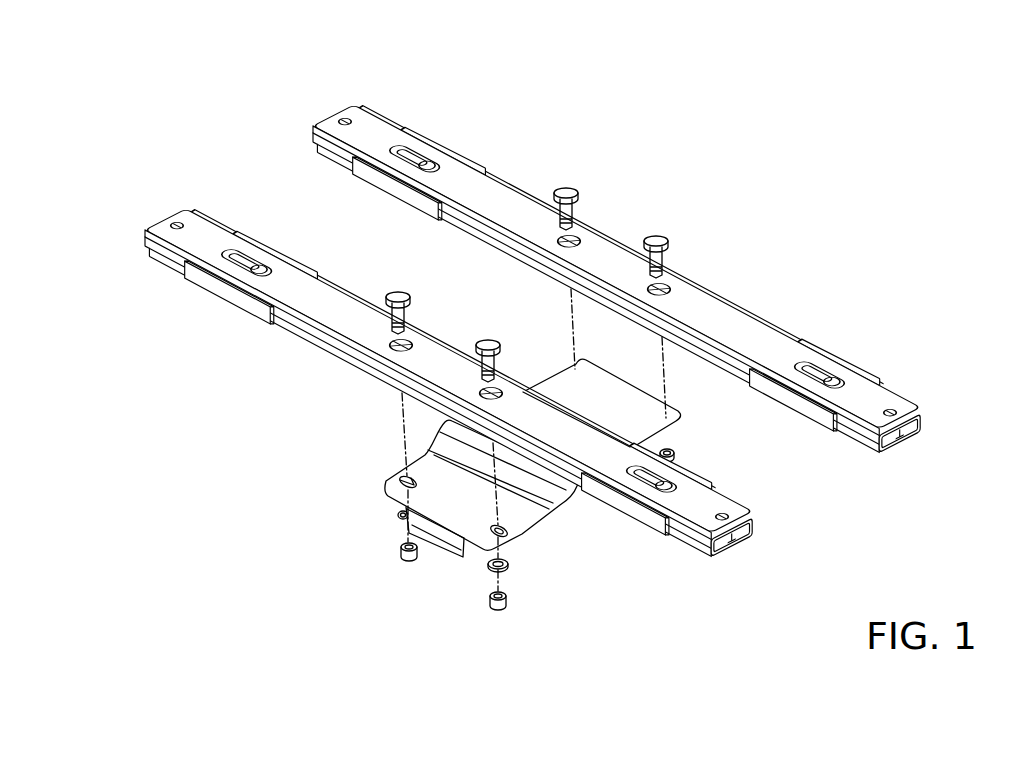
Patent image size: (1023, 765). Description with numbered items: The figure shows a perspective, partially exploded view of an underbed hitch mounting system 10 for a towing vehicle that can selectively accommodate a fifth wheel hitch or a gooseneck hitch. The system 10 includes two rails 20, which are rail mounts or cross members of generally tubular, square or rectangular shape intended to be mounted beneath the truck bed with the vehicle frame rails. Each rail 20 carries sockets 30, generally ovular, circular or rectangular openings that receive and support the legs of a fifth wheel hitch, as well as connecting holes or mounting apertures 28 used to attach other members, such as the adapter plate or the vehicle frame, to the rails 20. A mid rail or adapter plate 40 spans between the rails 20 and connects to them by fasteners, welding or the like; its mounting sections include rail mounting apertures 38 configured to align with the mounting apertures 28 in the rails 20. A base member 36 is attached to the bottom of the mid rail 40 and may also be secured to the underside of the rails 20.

The underbed hitch mounting system 10 is at (691, 65).
The rail 20 is at (718, 322).
The mounting aperture 28 is at (175, 220).
The socket 30 is at (424, 162).
The base member 36 is at (443, 538).
The rail mounting aperture 38 is at (398, 482).
The mid rail or adapter plate 40 is at (568, 500).